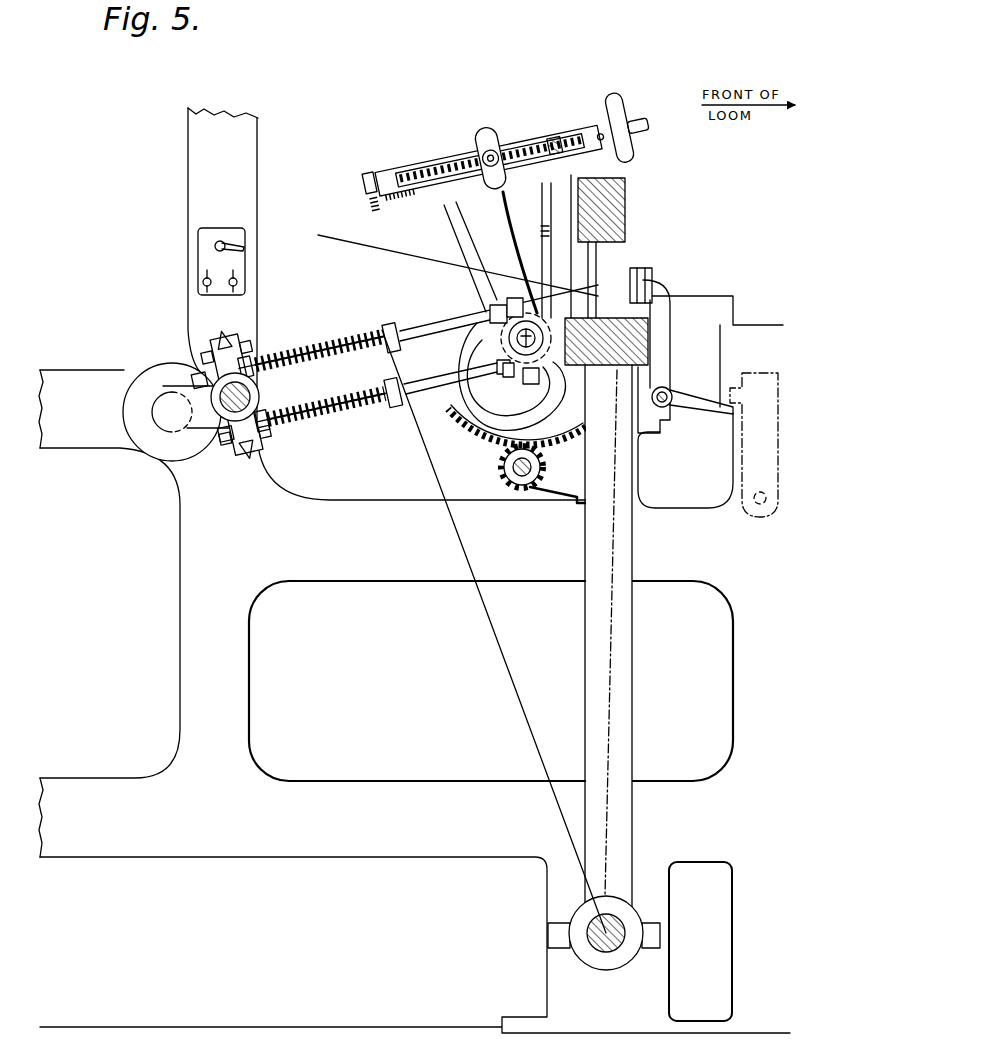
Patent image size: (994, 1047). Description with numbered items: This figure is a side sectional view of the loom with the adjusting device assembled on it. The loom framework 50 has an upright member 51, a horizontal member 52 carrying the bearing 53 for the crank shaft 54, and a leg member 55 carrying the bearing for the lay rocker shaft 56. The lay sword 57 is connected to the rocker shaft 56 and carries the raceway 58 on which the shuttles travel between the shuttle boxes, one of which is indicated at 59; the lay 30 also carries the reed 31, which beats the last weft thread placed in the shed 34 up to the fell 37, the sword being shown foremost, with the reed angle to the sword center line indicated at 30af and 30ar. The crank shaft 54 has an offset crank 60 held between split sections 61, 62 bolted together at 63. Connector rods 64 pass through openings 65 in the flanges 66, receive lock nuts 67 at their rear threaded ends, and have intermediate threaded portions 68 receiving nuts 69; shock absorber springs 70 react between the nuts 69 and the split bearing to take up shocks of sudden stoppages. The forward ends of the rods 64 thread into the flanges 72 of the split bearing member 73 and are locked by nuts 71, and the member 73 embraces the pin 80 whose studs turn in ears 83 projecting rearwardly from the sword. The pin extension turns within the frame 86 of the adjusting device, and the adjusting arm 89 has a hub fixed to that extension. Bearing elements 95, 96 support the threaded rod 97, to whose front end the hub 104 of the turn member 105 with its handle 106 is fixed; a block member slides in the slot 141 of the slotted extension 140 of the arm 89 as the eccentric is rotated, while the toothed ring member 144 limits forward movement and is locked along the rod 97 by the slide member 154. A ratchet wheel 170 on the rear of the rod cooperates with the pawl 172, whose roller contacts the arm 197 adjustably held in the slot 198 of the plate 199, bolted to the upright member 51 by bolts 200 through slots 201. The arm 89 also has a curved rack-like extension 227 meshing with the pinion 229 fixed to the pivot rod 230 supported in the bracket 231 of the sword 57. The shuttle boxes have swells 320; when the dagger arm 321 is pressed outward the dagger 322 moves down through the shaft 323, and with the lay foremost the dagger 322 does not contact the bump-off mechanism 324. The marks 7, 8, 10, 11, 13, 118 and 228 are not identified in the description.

The section line 7 is at (482, 107).
The section line 8 / bracket 8 is at (545, 172).
The protector mechanism 10 is at (524, 50).
The section 11 is at (330, 192).
The section line 13 is at (527, 315).
The lay 30 is at (622, 716).
The forward lay center-line position 30af is at (614, 553).
The rear lay center-line position 30ar is at (480, 590).
The reed 31 is at (595, 290).
The shed 34 is at (389, 254).
The fell 37 is at (668, 323).
The loom framework 50 is at (240, 685).
The upright member 51 is at (215, 141).
The horizontal member 52 is at (76, 440).
The bearing 53 is at (155, 440).
The crank shaft 54 is at (168, 410).
The leg member 55 is at (558, 974).
The lay rocker shaft 56 is at (605, 945).
The lay sword 57 is at (618, 642).
The raceway 58 is at (632, 352).
The shuttle box 59 is at (640, 272).
The offset crank 60 is at (240, 418).
The split section 61 is at (206, 428).
The split section 62 is at (262, 400).
The bolts 63 is at (242, 340).
The connector rods 64 is at (445, 320).
The openings 65 is at (243, 360).
The flanges 66 is at (224, 333).
The lock nuts 67 is at (198, 368).
The intermediate threaded portions 68 is at (400, 330).
The nuts 69 is at (382, 330).
The shock absorber springs 70 is at (352, 340).
The nuts 71 is at (500, 365).
The flanges 72 is at (500, 304).
The split bearing member 73 is at (548, 350).
The pin 80 is at (523, 362).
The ears 83 is at (553, 440).
The frame 86 is at (460, 203).
The adjusting arm 89 is at (497, 262).
The bearing element 95 is at (393, 170).
The bearing element 96 is at (592, 132).
The threaded rod 97 is at (425, 172).
The hub 104 is at (614, 112).
The turn member 105 is at (632, 112).
The handle 106 is at (650, 158).
The section line 118 is at (488, 132).
The slotted extension 140 is at (487, 150).
The slot 141 is at (493, 132).
The toothed ring member 144 is at (562, 147).
The slide member 154 is at (626, 198).
The ratchet wheel 170 is at (392, 200).
The pawl 172 is at (378, 180).
The arm 197 is at (246, 248).
The slot 198 is at (215, 243).
The plate 199 is at (200, 252).
The bolts 200 is at (202, 283).
The slots 201 is at (233, 278).
The curved rack-like extension 227 is at (475, 430).
The pinion 228 is at (503, 478).
The pinion 229 is at (510, 485).
The pivot rod 230 is at (533, 488).
The bracket 231 is at (560, 481).
The swells 320 is at (653, 286).
The dagger arm 321 is at (662, 300).
The dagger 322 is at (690, 403).
The shaft 323 is at (668, 393).
The bump-off mechanism 324 is at (747, 375).